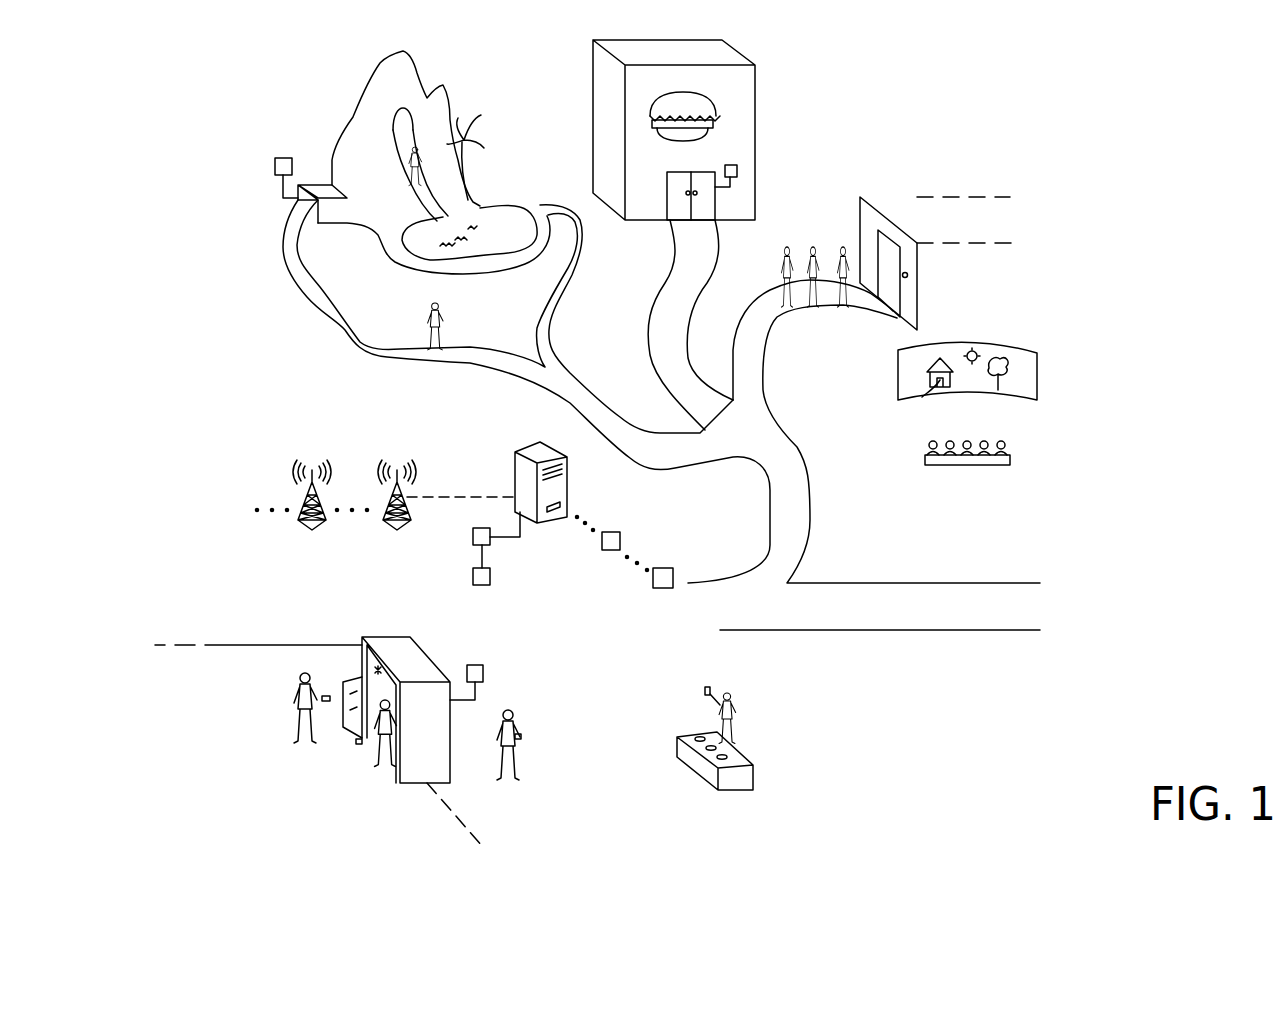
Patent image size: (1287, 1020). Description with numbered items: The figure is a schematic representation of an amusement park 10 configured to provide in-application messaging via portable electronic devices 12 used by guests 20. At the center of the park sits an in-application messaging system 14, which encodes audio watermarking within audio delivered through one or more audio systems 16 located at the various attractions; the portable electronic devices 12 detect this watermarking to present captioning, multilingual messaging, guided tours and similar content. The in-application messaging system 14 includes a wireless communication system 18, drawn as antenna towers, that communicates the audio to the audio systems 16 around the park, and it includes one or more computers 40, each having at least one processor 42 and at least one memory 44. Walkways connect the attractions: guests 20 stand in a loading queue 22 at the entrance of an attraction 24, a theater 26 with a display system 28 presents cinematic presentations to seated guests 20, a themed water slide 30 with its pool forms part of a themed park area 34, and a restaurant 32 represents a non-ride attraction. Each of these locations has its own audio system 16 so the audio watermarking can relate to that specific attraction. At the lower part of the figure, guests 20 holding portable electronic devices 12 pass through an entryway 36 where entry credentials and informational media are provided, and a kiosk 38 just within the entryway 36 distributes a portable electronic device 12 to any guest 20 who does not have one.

The amusement park 10 is at (281, 379).
The portable electronic device 12 is at (327, 697).
The in-application messaging system 14 is at (525, 431).
The audio system 16 is at (275, 170).
The wireless communication system 18 is at (327, 447).
The guest 20 is at (400, 60).
The loading queue 22 is at (822, 318).
The attraction 24 is at (870, 205).
The theater 26 is at (1040, 410).
The display system 28 is at (1013, 350).
The water slide 30 is at (362, 100).
The restaurant 32 is at (740, 52).
The park area 34 is at (521, 56).
The entryway 36 is at (452, 787).
The kiosk 38 is at (742, 778).
The computer 40 is at (633, 531).
The processor 42 is at (473, 537).
The memory 44 is at (473, 577).